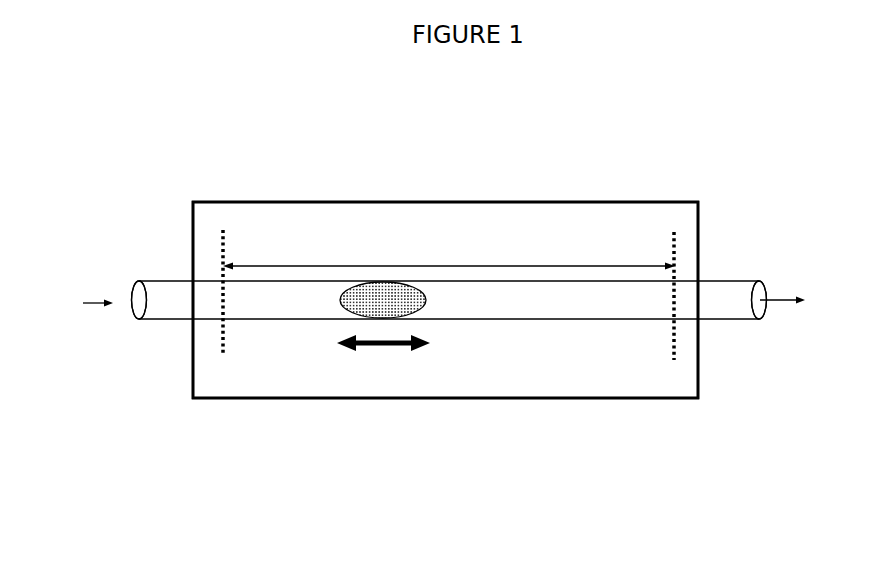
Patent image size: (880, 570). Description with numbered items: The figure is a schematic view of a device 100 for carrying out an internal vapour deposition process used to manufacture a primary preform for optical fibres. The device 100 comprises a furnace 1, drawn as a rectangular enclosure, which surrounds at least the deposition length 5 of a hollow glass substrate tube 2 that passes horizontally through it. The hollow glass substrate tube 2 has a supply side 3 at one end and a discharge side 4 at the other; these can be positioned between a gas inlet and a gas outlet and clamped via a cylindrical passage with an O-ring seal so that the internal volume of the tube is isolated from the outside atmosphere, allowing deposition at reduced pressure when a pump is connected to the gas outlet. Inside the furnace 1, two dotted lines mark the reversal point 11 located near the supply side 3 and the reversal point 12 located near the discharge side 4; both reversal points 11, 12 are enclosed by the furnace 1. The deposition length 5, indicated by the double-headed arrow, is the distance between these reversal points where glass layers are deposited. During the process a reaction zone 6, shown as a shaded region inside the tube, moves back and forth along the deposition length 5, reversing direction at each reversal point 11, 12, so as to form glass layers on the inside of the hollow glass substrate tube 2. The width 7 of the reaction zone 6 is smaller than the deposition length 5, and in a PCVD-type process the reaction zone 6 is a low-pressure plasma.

The device 100 is at (697, 118).
The furnace 1 is at (317, 192).
The hollow glass substrate tube 2 is at (172, 280).
The supply side 3 is at (138, 297).
The discharge side 4 is at (768, 308).
The deposition length 5 is at (435, 270).
The reaction zone 6 is at (423, 305).
The width of the reaction zone 7 is at (383, 362).
The reversal point 11 is at (218, 373).
The reversal point 12 is at (672, 373).